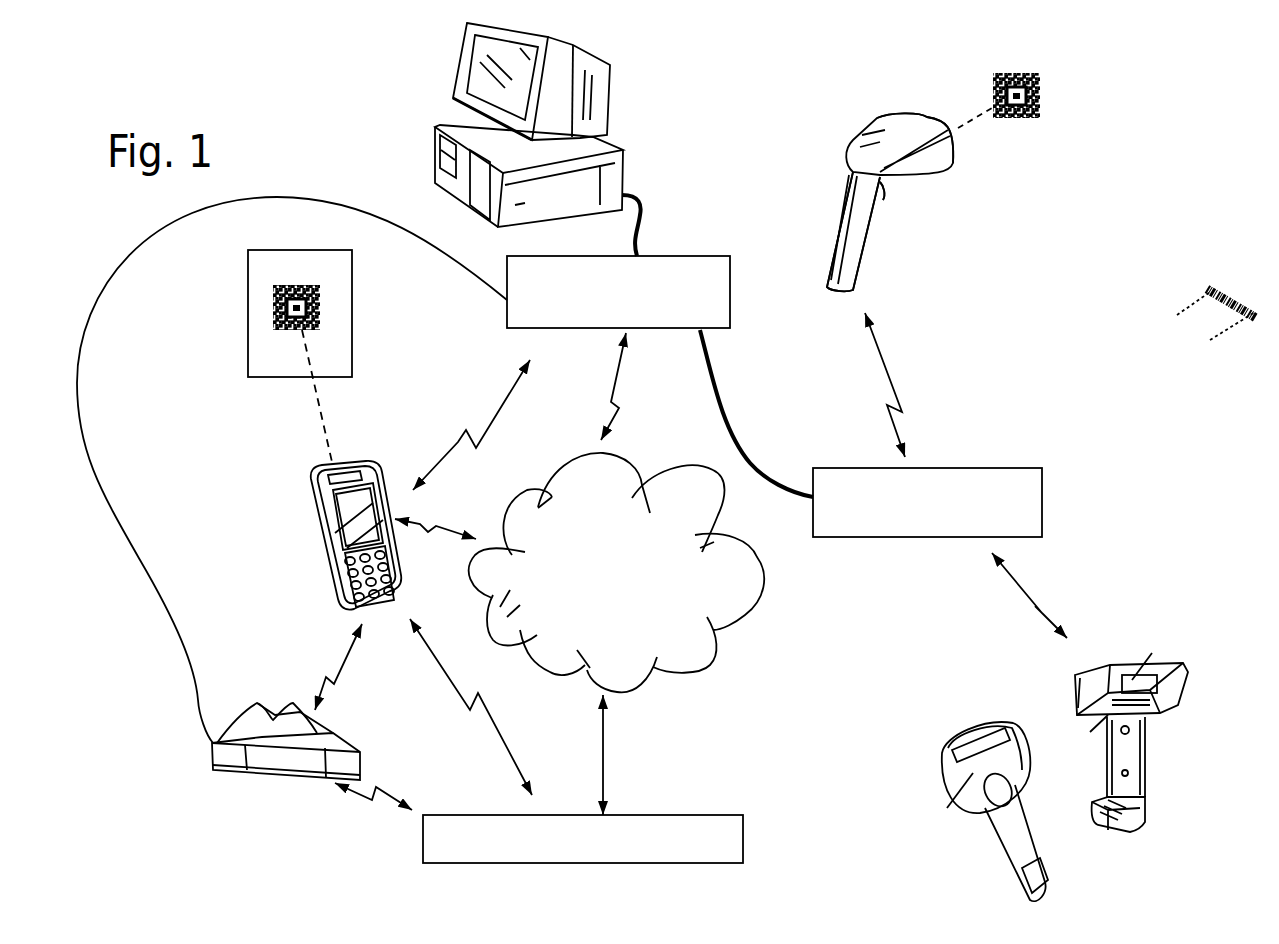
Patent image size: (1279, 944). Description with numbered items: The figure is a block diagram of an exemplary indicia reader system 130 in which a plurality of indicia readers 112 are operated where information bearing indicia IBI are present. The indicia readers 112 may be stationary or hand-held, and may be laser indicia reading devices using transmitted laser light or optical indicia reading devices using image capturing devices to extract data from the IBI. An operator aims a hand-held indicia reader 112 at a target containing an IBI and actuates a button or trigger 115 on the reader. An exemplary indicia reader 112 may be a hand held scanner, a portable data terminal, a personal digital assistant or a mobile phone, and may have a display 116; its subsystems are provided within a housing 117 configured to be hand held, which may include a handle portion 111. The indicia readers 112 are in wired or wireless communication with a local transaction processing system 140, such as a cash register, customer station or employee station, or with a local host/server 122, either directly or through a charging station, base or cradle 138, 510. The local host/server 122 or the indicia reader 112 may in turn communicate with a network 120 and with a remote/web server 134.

The indicia reader 112 is at (317, 563).
The handle portion 111 is at (853, 260).
The trigger 115 is at (883, 183).
The display 116 is at (343, 503).
The housing 117 is at (857, 137).
The network 120 is at (716, 645).
The local host/server 122 is at (687, 256).
The local system 130 is at (213, 804).
The remote/web server 134 is at (683, 815).
The cradle 138 is at (212, 765).
The local transaction processing system 140 is at (448, 110).
The cradle 510 is at (1131, 690).
The information bearing indicia IBI is at (352, 320).